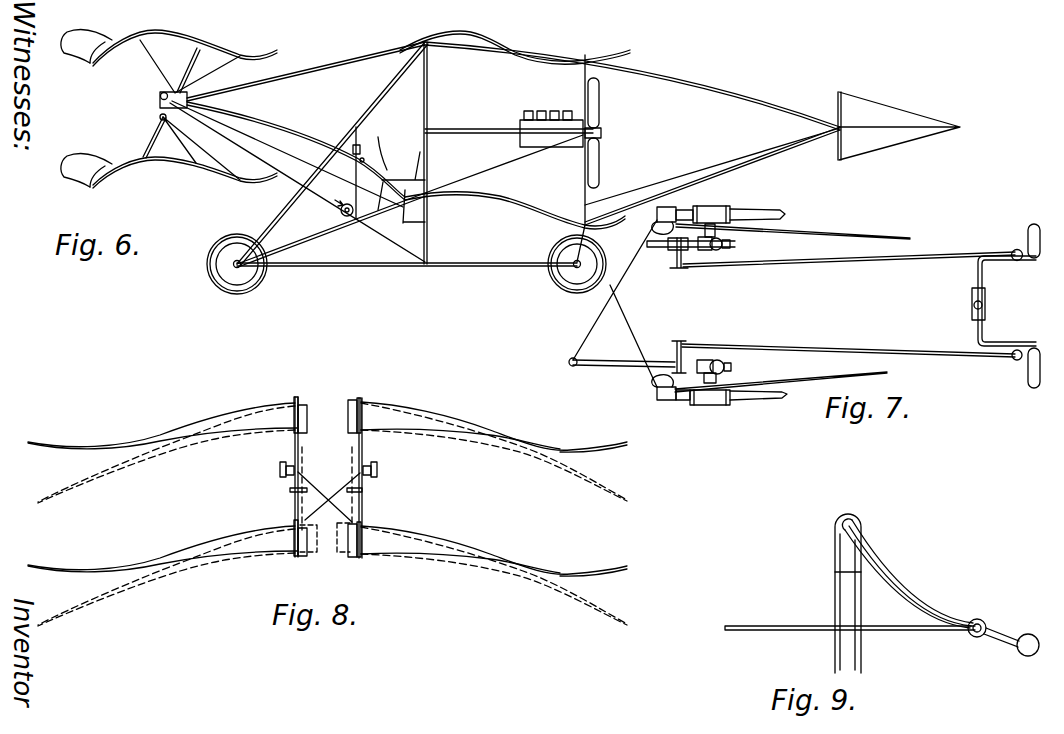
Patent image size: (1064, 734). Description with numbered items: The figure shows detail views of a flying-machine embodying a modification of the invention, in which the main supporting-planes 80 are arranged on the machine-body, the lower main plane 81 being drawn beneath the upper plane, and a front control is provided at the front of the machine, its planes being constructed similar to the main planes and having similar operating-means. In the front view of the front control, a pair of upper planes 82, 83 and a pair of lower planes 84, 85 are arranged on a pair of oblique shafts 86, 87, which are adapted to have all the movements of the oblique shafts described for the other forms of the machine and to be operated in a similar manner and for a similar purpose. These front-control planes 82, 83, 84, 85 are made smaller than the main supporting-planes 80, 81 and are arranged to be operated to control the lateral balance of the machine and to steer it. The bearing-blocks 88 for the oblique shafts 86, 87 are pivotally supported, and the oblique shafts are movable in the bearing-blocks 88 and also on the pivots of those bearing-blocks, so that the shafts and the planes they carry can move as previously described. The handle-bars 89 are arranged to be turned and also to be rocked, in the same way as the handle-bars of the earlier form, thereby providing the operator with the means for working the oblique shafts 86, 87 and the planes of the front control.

In FIG. 6, the main supporting-planes 80 is at (538, 51).
In FIG. 6, the lower main plane 81 is at (530, 213).
In FIG. 8, the upper plane 82 is at (267, 407).
In FIG. 6, the upper plane 83 is at (197, 47).
In FIG. 8, the upper plane 83 is at (407, 410).
In FIG. 8, the lower plane 84 is at (167, 573).
In FIG. 6, the lower plane 85 is at (200, 181).
In FIG. 8, the lower plane 85 is at (487, 573).
In FIG. 6, the oblique shaft 86 is at (192, 64).
In FIG. 7, the oblique shaft 86 is at (661, 249).
In FIG. 8, the oblique shaft 86 is at (299, 452).
In FIG. 7, the oblique shaft 87 is at (675, 350).
In FIG. 8, the oblique shaft 87 is at (359, 454).
In FIG. 7, the bearing-blocks 88 is at (708, 251).
In FIG. 7, the handle-bars 89 is at (1020, 263).
In FIG. 9, the handle-bars 89 is at (912, 590).